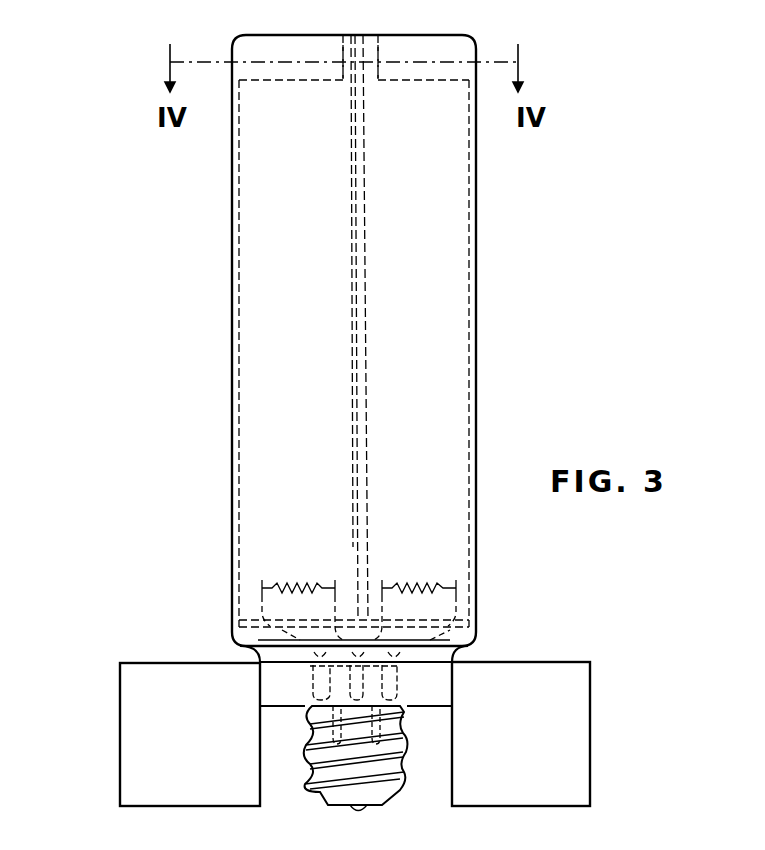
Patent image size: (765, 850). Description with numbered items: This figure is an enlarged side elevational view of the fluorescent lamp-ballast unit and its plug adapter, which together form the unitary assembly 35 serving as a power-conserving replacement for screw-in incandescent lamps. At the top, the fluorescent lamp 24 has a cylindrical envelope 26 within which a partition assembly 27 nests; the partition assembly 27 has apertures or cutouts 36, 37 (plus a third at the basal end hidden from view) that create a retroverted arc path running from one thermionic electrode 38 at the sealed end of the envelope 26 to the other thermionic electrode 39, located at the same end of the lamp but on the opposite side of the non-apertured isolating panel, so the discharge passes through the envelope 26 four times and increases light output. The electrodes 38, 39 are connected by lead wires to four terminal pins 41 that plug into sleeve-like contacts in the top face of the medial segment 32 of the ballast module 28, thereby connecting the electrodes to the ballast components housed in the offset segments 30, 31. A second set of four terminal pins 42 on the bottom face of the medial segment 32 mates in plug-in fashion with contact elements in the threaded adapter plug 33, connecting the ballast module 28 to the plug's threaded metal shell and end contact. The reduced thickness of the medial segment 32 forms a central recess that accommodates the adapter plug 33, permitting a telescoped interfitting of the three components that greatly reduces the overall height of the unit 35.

The fluorescent lamp 24 is at (232, 336).
The cylindrical envelope 26 is at (232, 260).
The partition assembly 27 is at (432, 248).
The ballast module 28 is at (120, 711).
The offset segment 30 is at (566, 668).
The offset segment 31 is at (152, 672).
The medial segment 32 is at (427, 692).
The threaded adapter plug 33 is at (322, 787).
The unitary assembly 35 is at (112, 447).
The aperture 36 is at (395, 56).
The aperture 37 is at (297, 66).
The thermionic electrode 38 is at (437, 580).
The thermionic electrode 39 is at (297, 580).
The terminal pins 41 is at (363, 688).
The terminal pins 42 is at (320, 749).